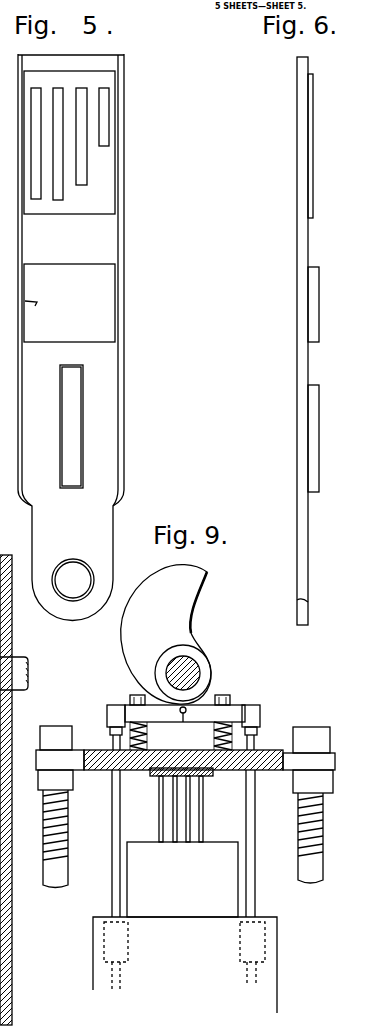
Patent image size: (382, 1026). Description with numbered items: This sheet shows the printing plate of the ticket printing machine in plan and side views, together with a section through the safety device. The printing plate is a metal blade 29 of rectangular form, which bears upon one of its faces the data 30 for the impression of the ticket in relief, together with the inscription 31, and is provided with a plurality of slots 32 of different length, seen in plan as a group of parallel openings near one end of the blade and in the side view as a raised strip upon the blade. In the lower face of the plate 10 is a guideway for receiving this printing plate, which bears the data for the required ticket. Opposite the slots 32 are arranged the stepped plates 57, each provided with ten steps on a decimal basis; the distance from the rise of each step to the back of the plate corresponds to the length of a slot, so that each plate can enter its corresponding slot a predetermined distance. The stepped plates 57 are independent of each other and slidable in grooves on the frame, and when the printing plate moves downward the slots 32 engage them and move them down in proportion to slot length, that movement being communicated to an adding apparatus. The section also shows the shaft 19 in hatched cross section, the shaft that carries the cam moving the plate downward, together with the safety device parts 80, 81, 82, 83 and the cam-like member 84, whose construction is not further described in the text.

In FIG. 9, the movable plate 10 is at (185, 807).
In FIG. 9, the shaft 19 is at (200, 673).
In FIG. 5, the metal blade 29 is at (113, 465).
In FIG. 6, the metal blade 29 is at (304, 507).
In FIG. 5, the data 30 is at (93, 304).
In FIG. 6, the data 30 is at (318, 318).
In FIG. 5, the inscription 31 is at (84, 443).
In FIG. 6, the inscription 31 is at (320, 462).
In FIG. 5, the slots 32 is at (58, 88).
In FIG. 6, the slots 32 is at (310, 146).
In FIG. 9, the stepped plates 57 is at (198, 817).
In FIG. 9, the posts 80 is at (250, 870).
In FIG. 9, the bar 81 is at (243, 705).
In FIG. 9, the springs 82 is at (181, 736).
In FIG. 9, the pin 83 is at (183, 722).
In FIG. 9, the cam 84 is at (166, 635).